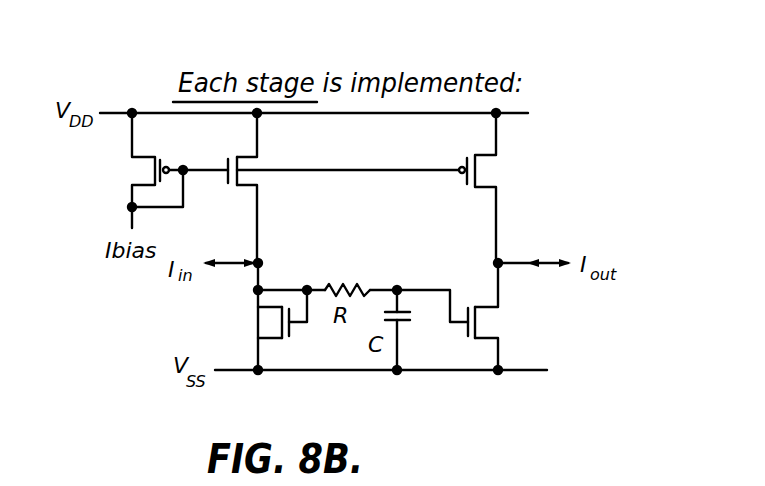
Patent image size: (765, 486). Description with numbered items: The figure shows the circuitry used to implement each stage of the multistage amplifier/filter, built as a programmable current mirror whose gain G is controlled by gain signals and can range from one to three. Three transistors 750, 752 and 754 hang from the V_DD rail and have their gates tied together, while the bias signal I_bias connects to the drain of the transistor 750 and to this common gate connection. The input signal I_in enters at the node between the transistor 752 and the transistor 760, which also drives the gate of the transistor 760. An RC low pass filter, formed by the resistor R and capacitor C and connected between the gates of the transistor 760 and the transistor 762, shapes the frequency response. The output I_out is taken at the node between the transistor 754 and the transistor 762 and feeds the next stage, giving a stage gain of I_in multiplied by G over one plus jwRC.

The transistor 750 is at (152, 166).
The transistor 752 is at (240, 167).
The transistor 754 is at (484, 162).
The transistor 760 is at (278, 316).
The transistor 762 is at (478, 331).